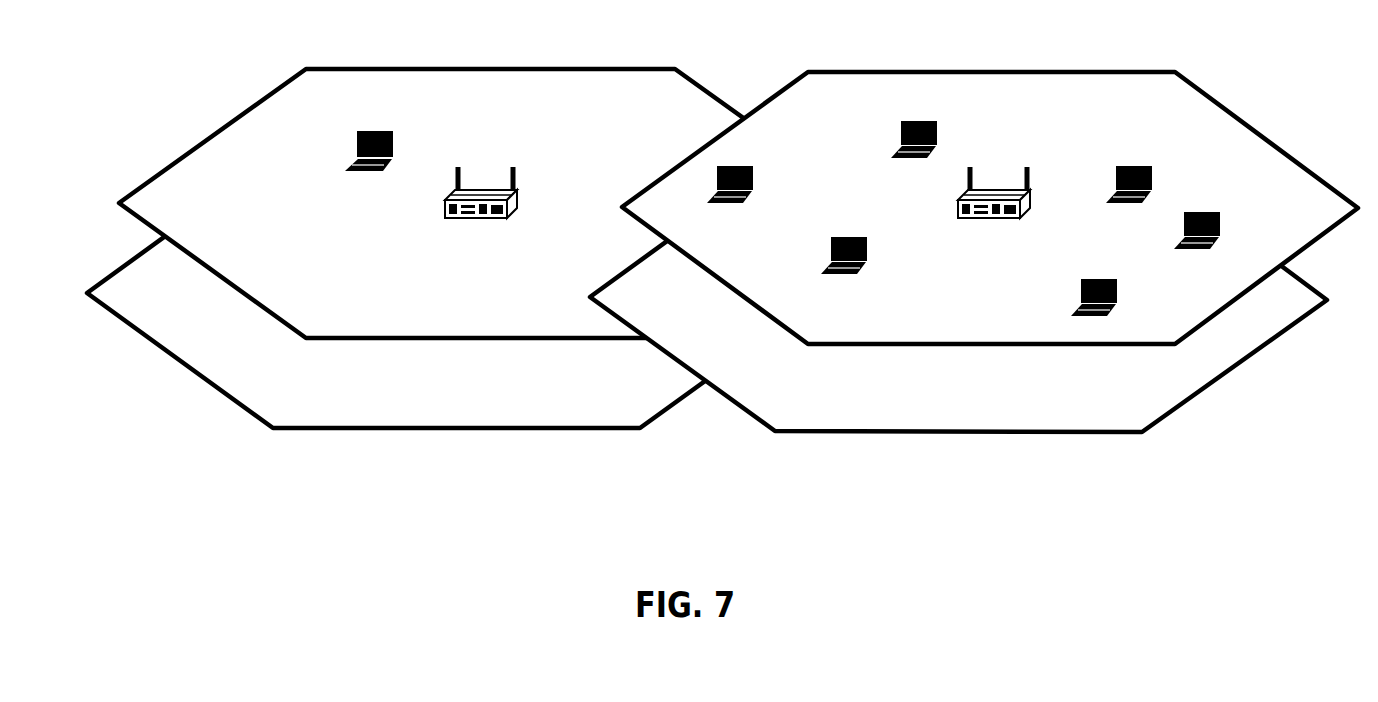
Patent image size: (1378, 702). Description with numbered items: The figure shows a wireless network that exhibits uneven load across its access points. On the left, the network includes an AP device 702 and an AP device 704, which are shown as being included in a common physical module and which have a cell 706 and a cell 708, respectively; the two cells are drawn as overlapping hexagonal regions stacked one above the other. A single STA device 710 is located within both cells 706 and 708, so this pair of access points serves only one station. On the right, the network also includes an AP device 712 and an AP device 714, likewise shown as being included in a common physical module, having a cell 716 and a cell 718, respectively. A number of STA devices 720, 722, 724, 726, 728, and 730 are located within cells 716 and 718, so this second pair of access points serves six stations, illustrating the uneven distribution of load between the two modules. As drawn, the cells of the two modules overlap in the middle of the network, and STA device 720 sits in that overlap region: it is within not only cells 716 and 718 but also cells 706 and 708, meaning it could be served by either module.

The AP device 702 is at (458, 160).
The AP device 704 is at (513, 162).
The cell 706 is at (153, 177).
The cell 708 is at (143, 335).
The STA device 710 is at (372, 130).
The AP device 712 is at (970, 167).
The AP device 714 is at (1027, 170).
The cell 716 is at (1297, 162).
The cell 718 is at (1273, 340).
The STA device 720 is at (737, 163).
The STA device 722 is at (845, 235).
The STA device 724 is at (920, 120).
The STA device 726 is at (1090, 277).
The STA device 728 is at (1130, 160).
The STA device 730 is at (1195, 208).